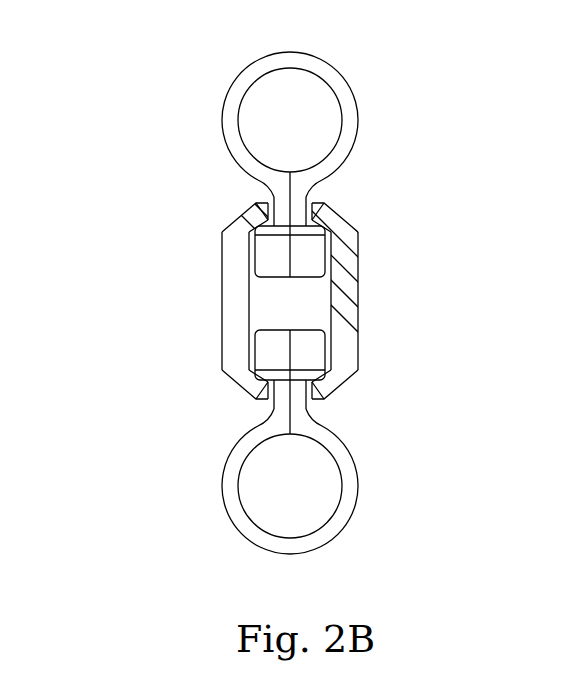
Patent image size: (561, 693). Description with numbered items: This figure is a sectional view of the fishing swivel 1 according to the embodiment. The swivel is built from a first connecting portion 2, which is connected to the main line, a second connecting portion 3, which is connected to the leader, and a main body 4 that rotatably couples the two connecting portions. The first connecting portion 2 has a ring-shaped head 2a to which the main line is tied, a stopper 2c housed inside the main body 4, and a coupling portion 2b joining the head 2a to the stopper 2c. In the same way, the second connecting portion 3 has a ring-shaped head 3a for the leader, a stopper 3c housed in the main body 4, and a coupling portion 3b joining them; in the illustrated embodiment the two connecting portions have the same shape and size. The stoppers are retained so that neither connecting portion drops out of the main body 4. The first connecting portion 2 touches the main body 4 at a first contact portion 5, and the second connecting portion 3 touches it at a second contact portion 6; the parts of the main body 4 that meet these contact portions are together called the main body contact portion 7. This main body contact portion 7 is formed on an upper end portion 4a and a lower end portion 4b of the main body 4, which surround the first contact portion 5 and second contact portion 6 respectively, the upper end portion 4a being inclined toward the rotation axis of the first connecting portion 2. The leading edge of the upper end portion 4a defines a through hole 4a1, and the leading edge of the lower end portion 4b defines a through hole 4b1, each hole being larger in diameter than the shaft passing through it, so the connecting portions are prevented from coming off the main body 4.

The fishing swivel 1 is at (183, 122).
The first connecting portion 2 is at (360, 119).
The head 2a is at (346, 86).
The coupling portion 2b is at (314, 263).
The stopper 2c is at (309, 200).
The second connecting portion 3 is at (353, 492).
The head 3a is at (349, 467).
The coupling portion 3b is at (314, 343).
The stopper 3c is at (309, 408).
The main body 4 is at (345, 300).
The upper end portion 4a is at (350, 226).
The through hole 4a1 is at (265, 204).
The lower end portion 4b is at (353, 378).
The through hole 4b1 is at (265, 404).
The first contact portion 5 is at (230, 241).
The second contact portion 6 is at (223, 362).
The main body contact portion 7 is at (252, 206).